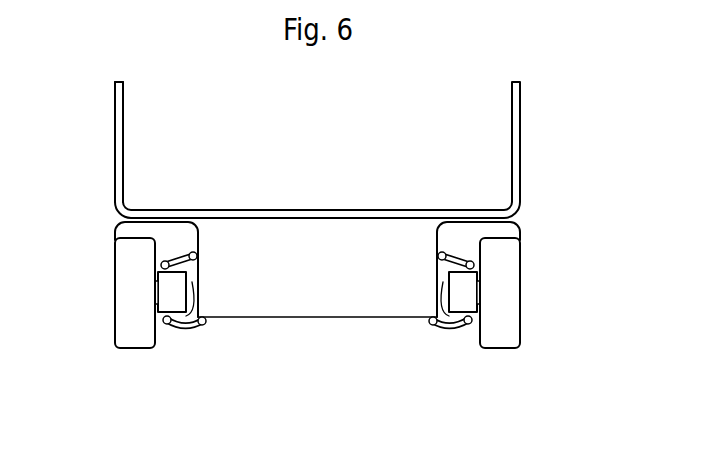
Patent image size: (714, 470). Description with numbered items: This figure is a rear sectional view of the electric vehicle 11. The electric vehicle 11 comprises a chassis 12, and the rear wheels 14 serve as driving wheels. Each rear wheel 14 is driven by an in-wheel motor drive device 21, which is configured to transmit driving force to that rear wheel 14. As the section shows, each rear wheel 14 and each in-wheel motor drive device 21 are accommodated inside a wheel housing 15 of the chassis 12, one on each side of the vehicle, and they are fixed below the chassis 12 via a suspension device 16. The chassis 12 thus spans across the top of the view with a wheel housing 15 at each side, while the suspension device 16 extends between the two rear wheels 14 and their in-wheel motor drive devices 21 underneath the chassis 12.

The electric vehicle 11 is at (549, 131).
The chassis 12 is at (157, 143).
The rear wheel 14 is at (127, 307).
The wheel housing 15 is at (132, 229).
The suspension device 16 is at (320, 298).
The in-wheel motor drive device 21 is at (177, 300).